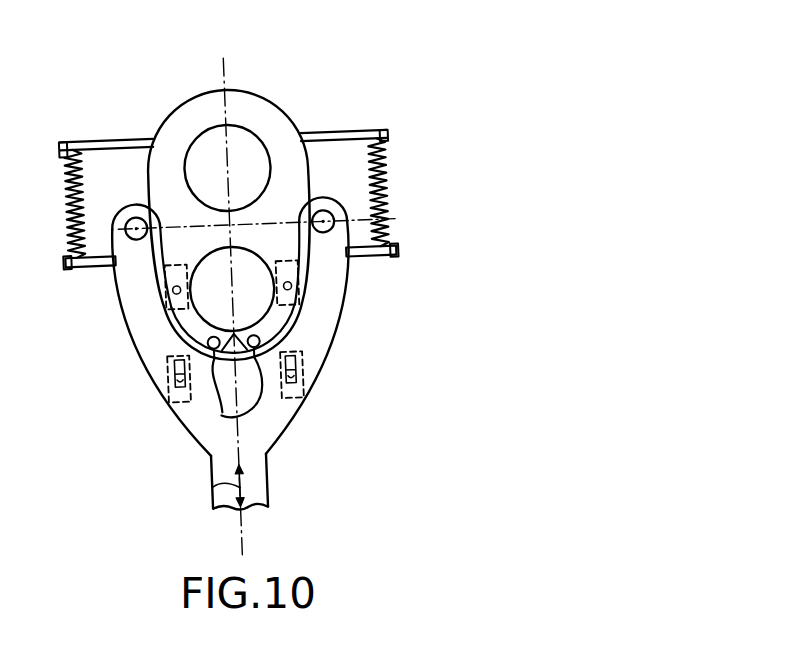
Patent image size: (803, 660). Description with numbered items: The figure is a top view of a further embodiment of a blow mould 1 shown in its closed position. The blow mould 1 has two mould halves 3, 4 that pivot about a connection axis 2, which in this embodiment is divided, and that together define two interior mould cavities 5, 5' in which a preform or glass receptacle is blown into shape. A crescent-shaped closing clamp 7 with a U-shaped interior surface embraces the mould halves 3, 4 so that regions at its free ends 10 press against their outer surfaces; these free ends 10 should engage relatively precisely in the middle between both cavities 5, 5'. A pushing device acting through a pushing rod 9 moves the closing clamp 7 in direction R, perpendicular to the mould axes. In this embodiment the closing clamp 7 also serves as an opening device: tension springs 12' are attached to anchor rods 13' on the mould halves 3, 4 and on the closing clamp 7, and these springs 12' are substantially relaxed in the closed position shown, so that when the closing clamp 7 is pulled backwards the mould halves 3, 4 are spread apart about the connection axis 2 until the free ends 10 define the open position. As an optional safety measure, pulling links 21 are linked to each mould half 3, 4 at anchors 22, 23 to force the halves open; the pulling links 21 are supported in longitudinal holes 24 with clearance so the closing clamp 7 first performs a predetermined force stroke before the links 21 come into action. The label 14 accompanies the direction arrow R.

The blow mould 1 is at (91, 456).
The connection axis 2 is at (213, 413).
The mould half 3 is at (281, 149).
The mould half 4 is at (182, 135).
The mould cavity 5 is at (234, 139).
The mould cavity 5' is at (288, 290).
The closing clamp 7 is at (326, 343).
The pushing rod 9 is at (256, 485).
The free ends 10 is at (333, 225).
The tension springs 12' is at (263, 196).
The anchor rods 13' is at (262, 215).
The pulling links 21 is at (167, 341).
The anchor 22 is at (156, 282).
The anchor 23 is at (161, 358).
The longitudinal holes 24 is at (160, 378).
The direction of movement R 14 is at (200, 500).